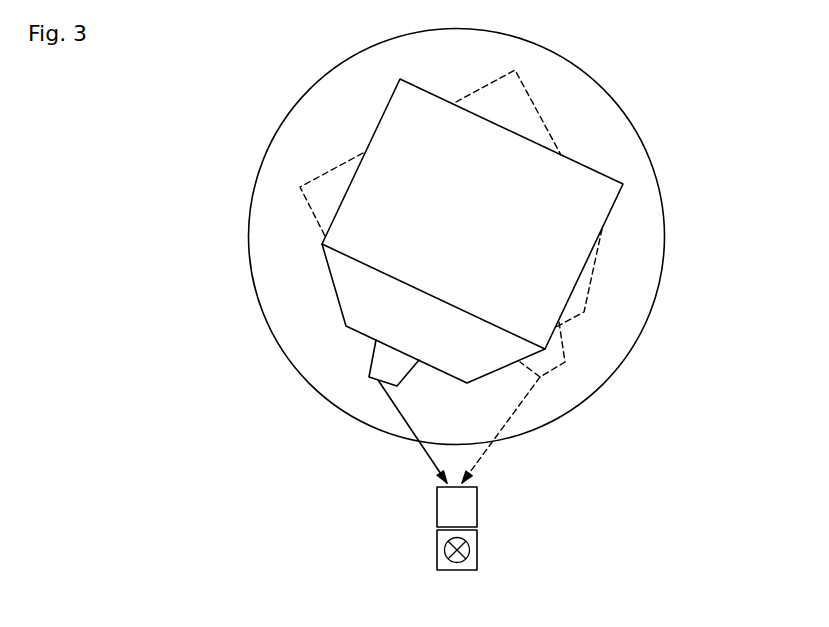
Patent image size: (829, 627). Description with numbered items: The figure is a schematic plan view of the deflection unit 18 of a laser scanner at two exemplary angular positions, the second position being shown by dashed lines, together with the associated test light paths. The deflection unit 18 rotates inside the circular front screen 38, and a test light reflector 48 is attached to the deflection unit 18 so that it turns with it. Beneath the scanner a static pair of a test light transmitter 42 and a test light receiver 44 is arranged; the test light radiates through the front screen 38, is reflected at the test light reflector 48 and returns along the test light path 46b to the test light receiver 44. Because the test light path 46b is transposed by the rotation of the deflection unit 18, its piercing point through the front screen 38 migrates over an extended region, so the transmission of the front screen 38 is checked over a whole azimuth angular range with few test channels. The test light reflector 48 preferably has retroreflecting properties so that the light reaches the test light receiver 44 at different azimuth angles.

The deflection unit 18 is at (461, 226).
The front screen 38 is at (488, 237).
The test light transmitter 42 is at (426, 551).
The test light receiver 44 is at (426, 507).
The test light path 46b is at (446, 432).
The test light reflector 48 is at (459, 354).